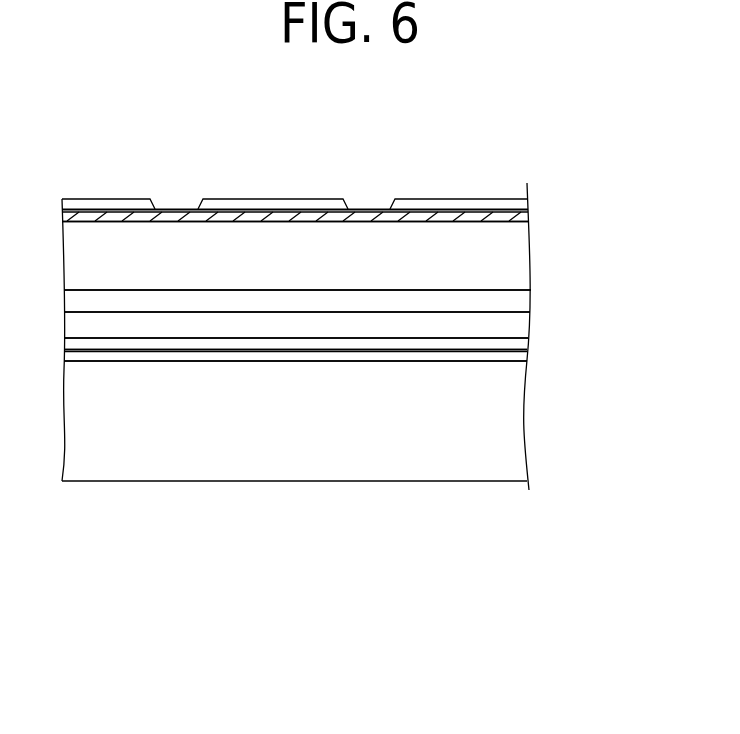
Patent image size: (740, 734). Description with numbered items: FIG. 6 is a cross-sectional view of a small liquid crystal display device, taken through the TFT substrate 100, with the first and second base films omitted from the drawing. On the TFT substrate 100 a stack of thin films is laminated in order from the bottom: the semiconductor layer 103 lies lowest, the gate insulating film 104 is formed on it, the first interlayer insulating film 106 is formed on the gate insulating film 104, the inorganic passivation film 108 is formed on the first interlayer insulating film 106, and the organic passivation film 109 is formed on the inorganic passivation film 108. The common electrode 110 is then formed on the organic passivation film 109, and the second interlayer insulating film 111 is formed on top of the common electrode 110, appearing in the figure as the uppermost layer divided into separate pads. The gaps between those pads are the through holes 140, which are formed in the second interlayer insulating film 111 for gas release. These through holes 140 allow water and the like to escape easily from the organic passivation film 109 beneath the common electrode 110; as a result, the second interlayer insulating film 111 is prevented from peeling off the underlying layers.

The TFT substrate 100 is at (497, 433).
The semiconductor layer 103 is at (512, 358).
The gate insulating film 104 is at (512, 345).
The first interlayer insulating film 106 is at (515, 326).
The inorganic passivation film 108 is at (515, 298).
The organic passivation film 109 is at (508, 253).
The common electrode 110 is at (512, 221).
The second interlayer insulating film 111 is at (510, 207).
The through holes 140 is at (175, 205).